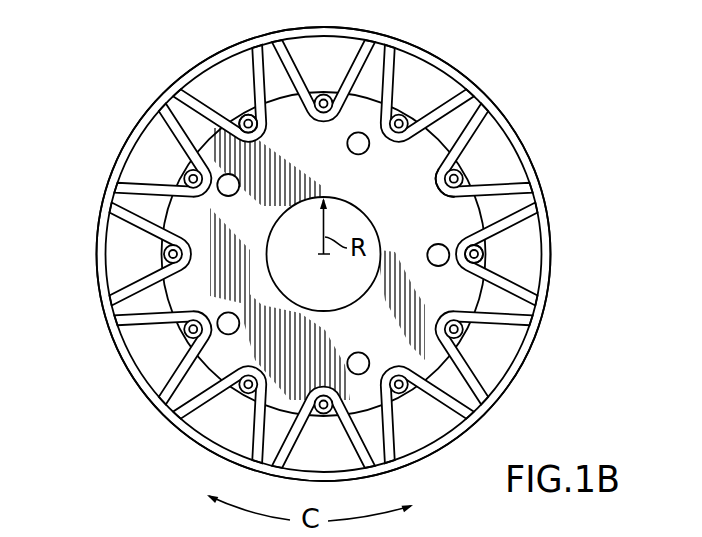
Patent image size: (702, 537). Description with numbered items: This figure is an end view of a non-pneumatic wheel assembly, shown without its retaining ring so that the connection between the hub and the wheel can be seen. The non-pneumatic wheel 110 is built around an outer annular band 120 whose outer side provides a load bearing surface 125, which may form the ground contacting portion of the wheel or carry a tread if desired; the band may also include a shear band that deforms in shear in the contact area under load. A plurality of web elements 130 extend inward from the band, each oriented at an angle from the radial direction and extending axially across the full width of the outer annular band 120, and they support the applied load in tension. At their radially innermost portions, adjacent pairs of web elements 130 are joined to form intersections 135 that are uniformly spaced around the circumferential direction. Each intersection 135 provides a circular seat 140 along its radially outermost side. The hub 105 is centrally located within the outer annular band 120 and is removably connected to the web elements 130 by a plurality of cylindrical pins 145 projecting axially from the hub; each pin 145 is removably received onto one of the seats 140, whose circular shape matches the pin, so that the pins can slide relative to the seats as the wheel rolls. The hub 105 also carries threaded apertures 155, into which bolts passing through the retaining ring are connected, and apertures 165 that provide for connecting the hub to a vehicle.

The hub 105 is at (202, 236).
The non-pneumatic wheel 110 is at (502, 78).
The outer annular band 120 is at (549, 292).
The load bearing surface 125 is at (536, 353).
The web elements 130 is at (387, 82).
The intersections 135 is at (436, 191).
The seat 140 is at (247, 123).
The pins 145 is at (465, 186).
The threaded apertures 155 is at (482, 252).
The apertures 165 is at (232, 321).